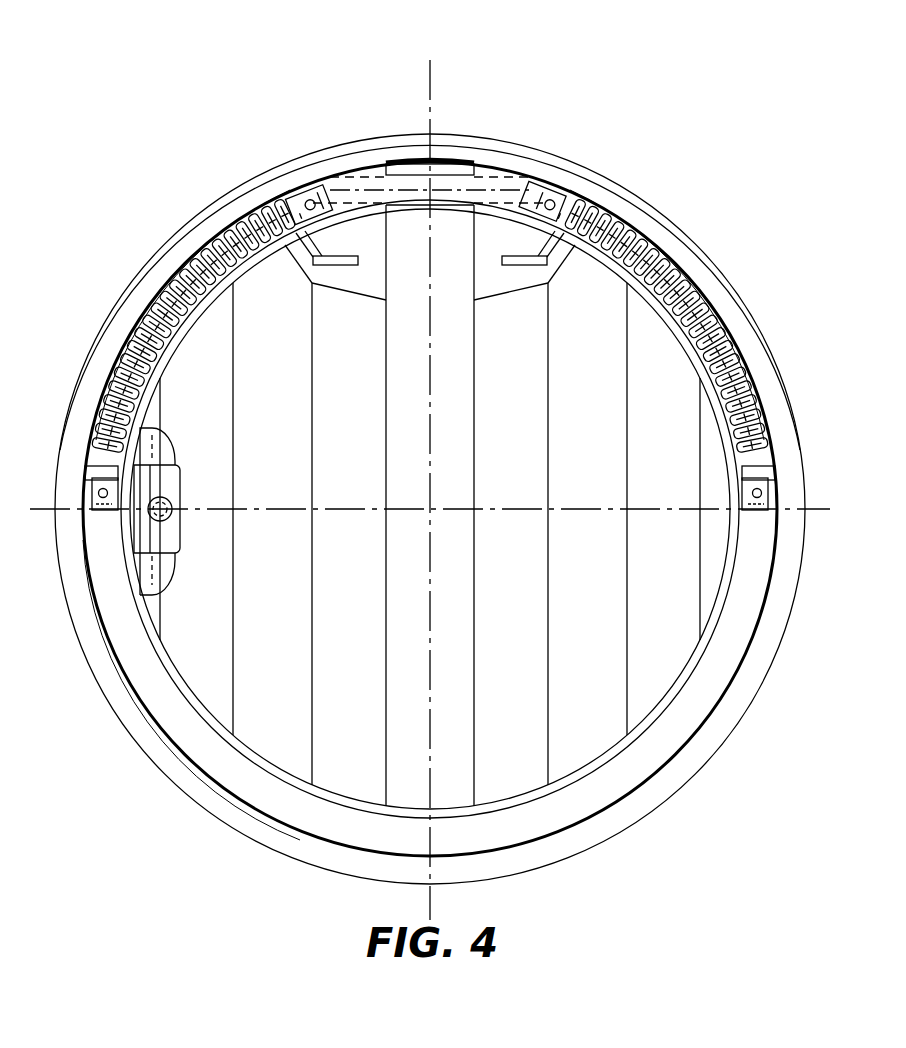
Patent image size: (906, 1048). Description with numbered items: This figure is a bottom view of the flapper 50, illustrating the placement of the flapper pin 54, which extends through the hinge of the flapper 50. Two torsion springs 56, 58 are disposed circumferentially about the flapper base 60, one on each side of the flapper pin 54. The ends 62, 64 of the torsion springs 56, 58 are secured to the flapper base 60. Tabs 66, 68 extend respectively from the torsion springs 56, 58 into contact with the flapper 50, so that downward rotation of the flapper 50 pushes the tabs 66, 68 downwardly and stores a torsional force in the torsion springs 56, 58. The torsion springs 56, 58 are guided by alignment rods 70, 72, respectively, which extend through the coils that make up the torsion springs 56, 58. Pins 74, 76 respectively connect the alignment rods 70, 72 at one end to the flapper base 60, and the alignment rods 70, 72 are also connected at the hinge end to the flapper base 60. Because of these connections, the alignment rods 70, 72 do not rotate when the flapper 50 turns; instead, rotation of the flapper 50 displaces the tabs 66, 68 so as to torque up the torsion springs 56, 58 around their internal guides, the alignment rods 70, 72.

The flapper 50 is at (526, 606).
The flapper pin 54 is at (400, 168).
The torsion spring 56 is at (173, 321).
The torsion spring 58 is at (688, 321).
The flapper base 60 is at (190, 735).
The end of torsion spring 62 is at (92, 470).
The end of torsion spring 64 is at (768, 470).
The tab 66 is at (336, 260).
The tab 68 is at (525, 260).
The alignment rod 70 is at (170, 270).
The alignment rod 72 is at (690, 270).
The pin 74 is at (100, 493).
The pin 76 is at (760, 493).